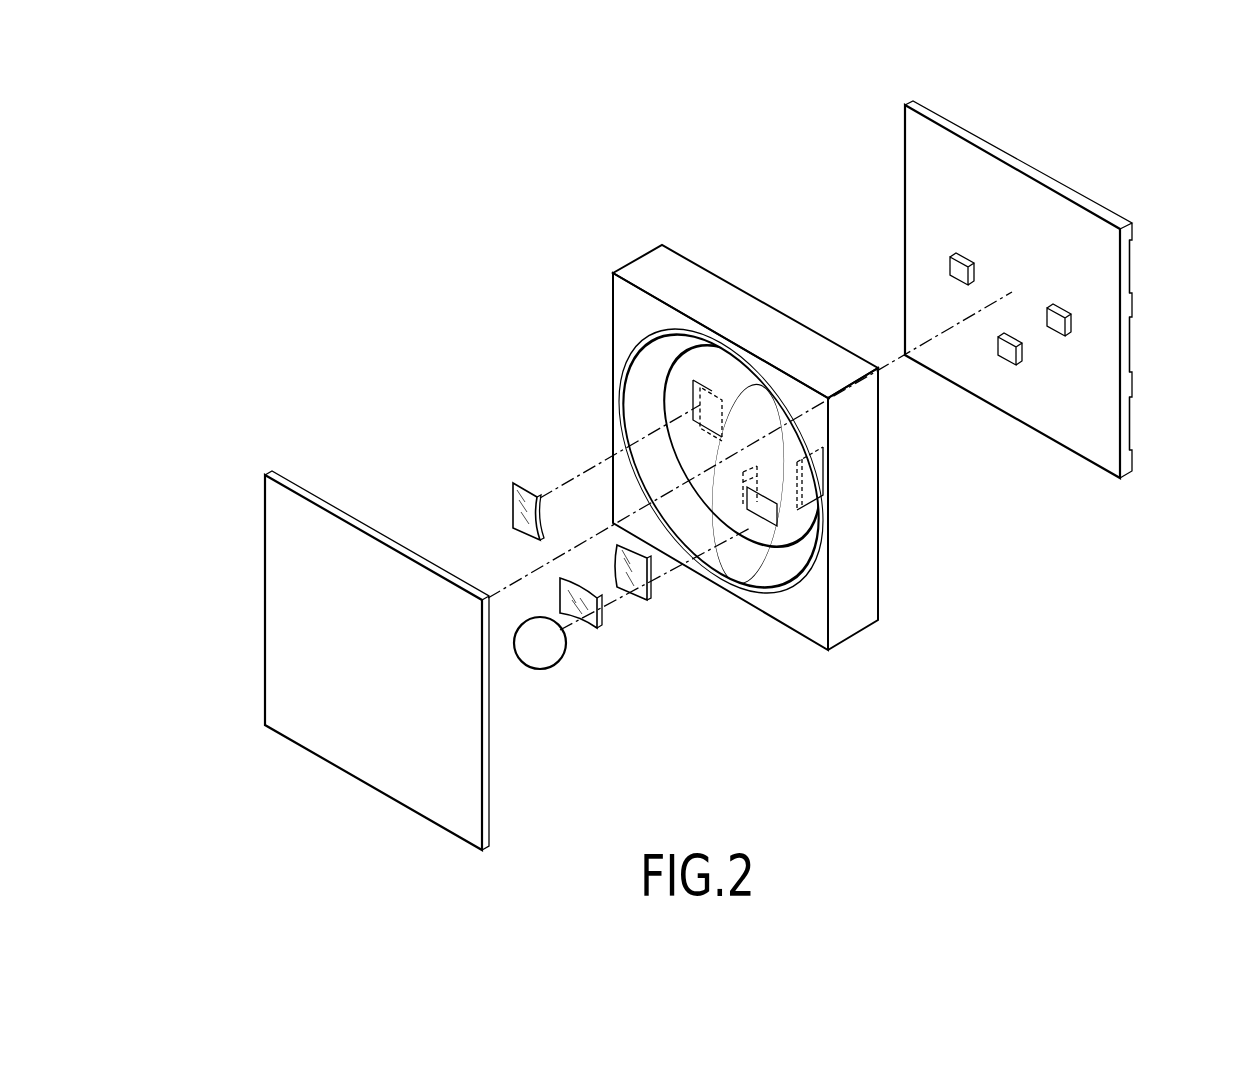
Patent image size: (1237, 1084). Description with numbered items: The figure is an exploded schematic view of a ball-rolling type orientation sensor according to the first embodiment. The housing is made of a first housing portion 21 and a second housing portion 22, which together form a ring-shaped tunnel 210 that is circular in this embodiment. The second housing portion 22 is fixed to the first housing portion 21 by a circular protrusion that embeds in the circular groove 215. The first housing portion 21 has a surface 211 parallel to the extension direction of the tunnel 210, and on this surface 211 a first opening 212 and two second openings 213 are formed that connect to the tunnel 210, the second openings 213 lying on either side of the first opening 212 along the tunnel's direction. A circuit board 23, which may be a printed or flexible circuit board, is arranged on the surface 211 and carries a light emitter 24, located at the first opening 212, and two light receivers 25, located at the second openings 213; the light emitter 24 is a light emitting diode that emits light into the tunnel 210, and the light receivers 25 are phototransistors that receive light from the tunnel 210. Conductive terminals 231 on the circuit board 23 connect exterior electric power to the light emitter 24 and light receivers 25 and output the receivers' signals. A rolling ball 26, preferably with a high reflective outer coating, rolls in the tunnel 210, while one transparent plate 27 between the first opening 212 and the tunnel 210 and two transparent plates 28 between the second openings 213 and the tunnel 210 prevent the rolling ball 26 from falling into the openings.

The first housing portion 21 is at (727, 415).
The surface 211 is at (720, 272).
The first opening 212 is at (746, 535).
The second openings 213 is at (700, 402).
The circular groove 215 is at (636, 344).
The ring-shaped tunnel 210 is at (630, 423).
The second housing portion 22 is at (282, 558).
The circuit board 23 is at (1021, 291).
The light emitter 24 is at (1000, 355).
The light receivers 25 is at (950, 263).
The rolling ball 26 is at (535, 678).
The transparent plate 27 is at (580, 630).
The transparent plates 28 is at (517, 511).
The conductive terminals 231 is at (1137, 428).